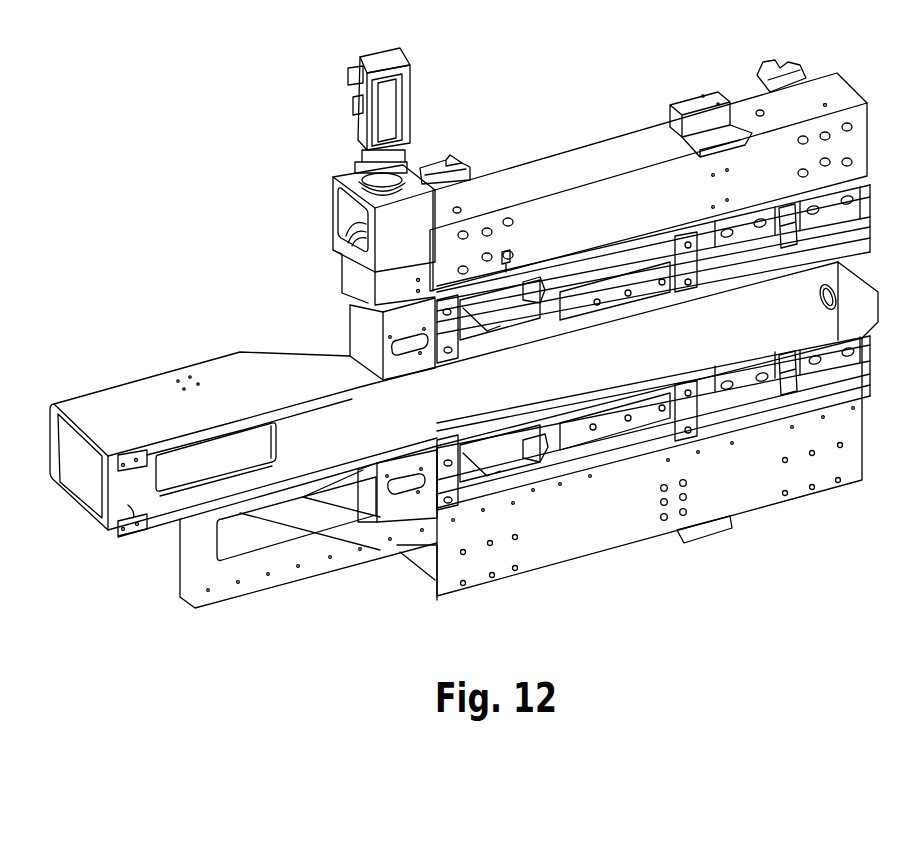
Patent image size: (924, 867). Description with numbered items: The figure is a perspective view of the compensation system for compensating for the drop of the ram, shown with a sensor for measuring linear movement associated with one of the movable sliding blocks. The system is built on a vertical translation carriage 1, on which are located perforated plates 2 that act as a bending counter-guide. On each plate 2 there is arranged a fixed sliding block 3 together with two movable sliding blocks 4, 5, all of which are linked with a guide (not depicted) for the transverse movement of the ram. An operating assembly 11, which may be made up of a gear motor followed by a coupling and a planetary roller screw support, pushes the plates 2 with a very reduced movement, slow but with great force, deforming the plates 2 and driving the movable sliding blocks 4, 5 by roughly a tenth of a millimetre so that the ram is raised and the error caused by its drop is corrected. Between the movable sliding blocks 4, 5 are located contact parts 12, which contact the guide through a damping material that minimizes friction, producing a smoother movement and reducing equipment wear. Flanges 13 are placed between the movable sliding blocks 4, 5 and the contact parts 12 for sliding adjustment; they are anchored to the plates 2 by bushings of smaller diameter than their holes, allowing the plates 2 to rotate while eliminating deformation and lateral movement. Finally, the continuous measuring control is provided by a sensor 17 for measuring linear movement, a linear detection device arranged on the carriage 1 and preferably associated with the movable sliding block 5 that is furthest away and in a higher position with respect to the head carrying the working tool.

The vertical translation carriage 1 is at (683, 193).
The perforated plate 2 is at (400, 330).
The fixed sliding block 3 is at (830, 213).
The movable sliding block 4 is at (747, 233).
The movable sliding block 5 is at (487, 293).
The operating assembly 11 is at (342, 135).
The contact part 12 is at (627, 250).
The flange 13 is at (580, 310).
The sensor for measuring linear movement 17 is at (506, 248).